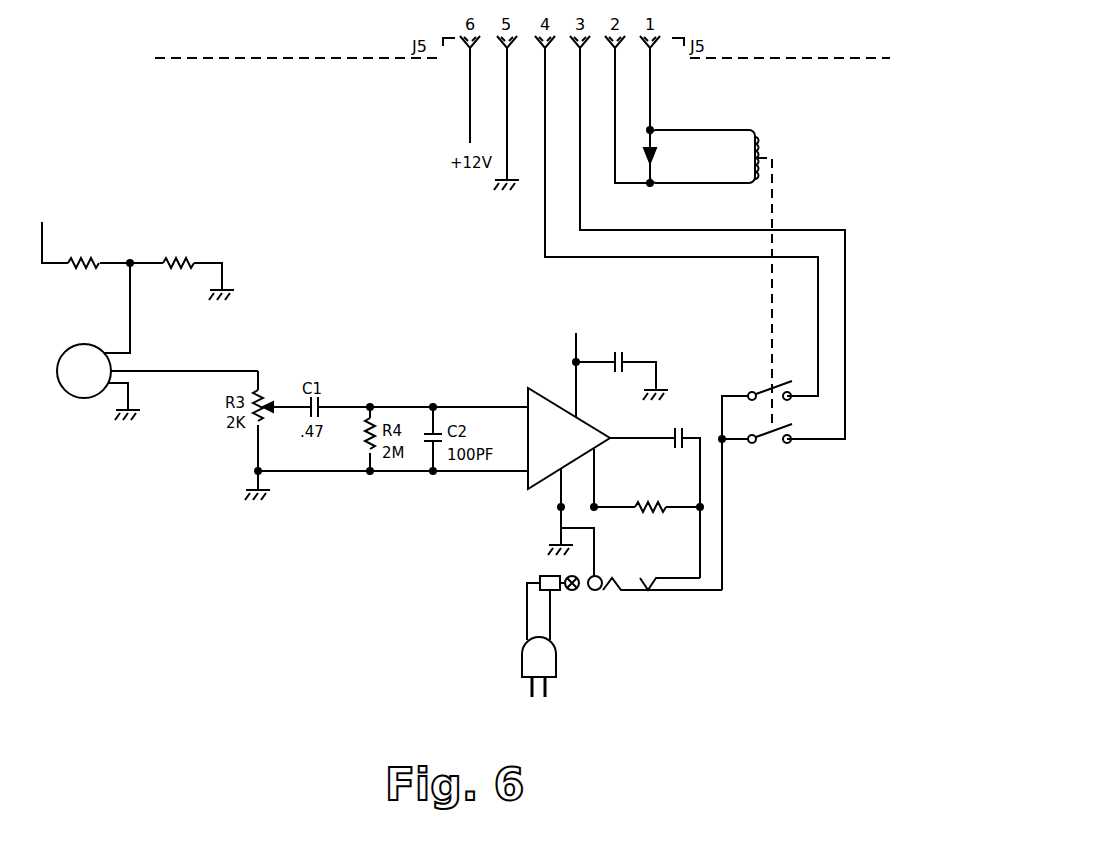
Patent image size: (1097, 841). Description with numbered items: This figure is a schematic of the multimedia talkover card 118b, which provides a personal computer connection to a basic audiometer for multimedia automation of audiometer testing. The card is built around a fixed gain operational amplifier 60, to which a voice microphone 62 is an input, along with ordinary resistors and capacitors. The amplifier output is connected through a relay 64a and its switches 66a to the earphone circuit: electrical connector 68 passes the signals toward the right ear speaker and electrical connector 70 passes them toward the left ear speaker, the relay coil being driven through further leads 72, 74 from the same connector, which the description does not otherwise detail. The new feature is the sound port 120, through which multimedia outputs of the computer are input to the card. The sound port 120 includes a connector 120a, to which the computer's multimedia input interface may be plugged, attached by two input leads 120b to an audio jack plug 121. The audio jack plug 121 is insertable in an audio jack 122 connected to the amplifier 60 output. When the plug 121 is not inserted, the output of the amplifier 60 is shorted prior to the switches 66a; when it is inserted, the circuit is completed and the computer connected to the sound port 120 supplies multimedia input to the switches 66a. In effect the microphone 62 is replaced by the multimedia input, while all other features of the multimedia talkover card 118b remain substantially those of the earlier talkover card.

The multimedia talkover card 118b is at (152, 146).
The conductor to connector pin 1 72 is at (650, 82).
The conductor to connector pin 2 74 is at (617, 120).
The relay 64a is at (800, 186).
The electrical connector 68 is at (580, 194).
The electrical connector 70 is at (545, 243).
The fixed gain operational amplifier 60 is at (548, 397).
The voice microphone 62 is at (84, 398).
The switches 66a is at (780, 390).
The audio jack plug 121 is at (553, 577).
The input leads 120b is at (548, 611).
The connector 120a is at (522, 655).
The sound port 120 is at (488, 677).
The audio jack 122 is at (600, 592).